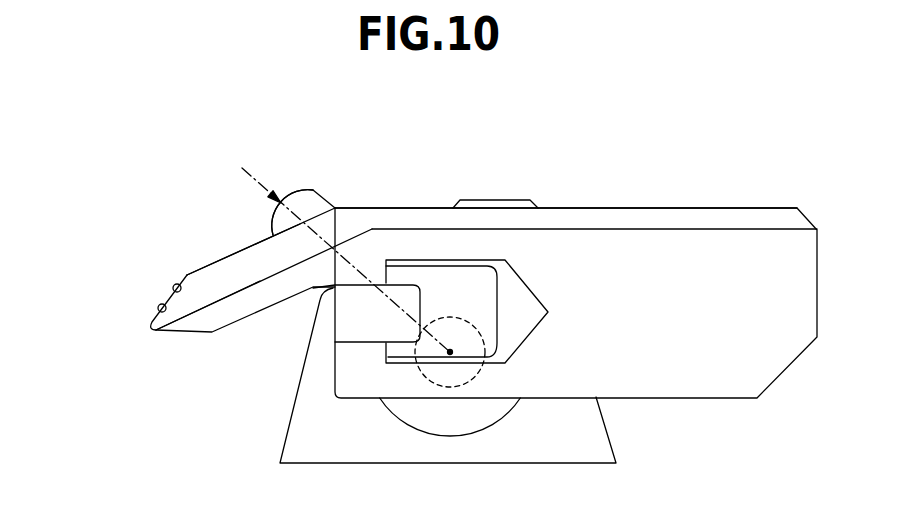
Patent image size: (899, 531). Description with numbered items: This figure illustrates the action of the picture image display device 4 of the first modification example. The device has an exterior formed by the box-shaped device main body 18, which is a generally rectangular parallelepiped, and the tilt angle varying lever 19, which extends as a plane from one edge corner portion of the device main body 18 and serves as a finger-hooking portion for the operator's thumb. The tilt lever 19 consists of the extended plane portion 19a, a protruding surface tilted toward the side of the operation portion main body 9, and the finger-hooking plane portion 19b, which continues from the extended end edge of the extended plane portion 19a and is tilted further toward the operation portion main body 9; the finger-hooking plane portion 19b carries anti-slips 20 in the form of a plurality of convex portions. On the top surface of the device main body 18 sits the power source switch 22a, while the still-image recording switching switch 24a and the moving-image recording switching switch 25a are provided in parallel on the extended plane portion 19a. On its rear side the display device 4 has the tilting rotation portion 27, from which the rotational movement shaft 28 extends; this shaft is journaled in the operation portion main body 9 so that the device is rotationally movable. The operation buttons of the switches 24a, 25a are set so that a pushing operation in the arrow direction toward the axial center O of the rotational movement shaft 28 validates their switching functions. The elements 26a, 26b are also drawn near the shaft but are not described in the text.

The apparatus body 4 is at (760, 195).
The base 9 is at (610, 438).
The housing 18 is at (678, 208).
The arm 19 is at (203, 269).
The first arm portion 19a is at (242, 248).
The second arm portion 19b is at (173, 283).
The pins 20 is at (160, 307).
The projection 22a is at (507, 200).
The engaging portion 24a is at (292, 212).
The cam surface 25a is at (287, 210).
The first engaging member 26a is at (375, 315).
The second engaging member 26b is at (397, 352).
The shaft 27 is at (447, 437).
The gear 28 is at (427, 380).
The rotation center O is at (450, 352).